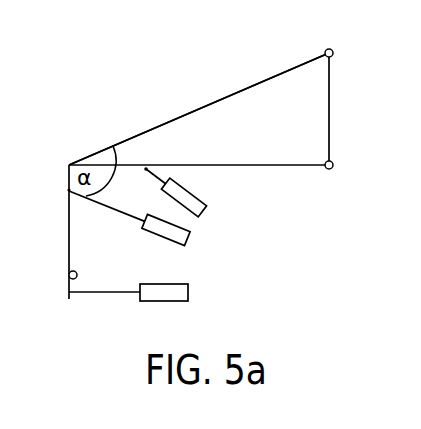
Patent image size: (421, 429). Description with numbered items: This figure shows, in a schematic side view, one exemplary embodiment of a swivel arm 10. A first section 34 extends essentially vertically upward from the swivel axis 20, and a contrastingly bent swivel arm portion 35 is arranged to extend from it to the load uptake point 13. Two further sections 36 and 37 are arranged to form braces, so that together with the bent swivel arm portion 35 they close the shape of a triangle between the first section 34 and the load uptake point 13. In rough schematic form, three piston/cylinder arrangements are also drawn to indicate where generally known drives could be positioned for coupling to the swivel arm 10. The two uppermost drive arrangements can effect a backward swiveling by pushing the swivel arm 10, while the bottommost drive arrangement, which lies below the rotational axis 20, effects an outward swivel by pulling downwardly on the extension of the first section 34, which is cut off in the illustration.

The swivel arm 10 is at (192, 102).
The load uptake point 13 is at (328, 49).
The swivel axis 20 is at (77, 274).
The section 34 is at (68, 190).
The swivel arm portion 35 is at (233, 95).
The section 36 is at (225, 164).
The section 37 is at (328, 105).